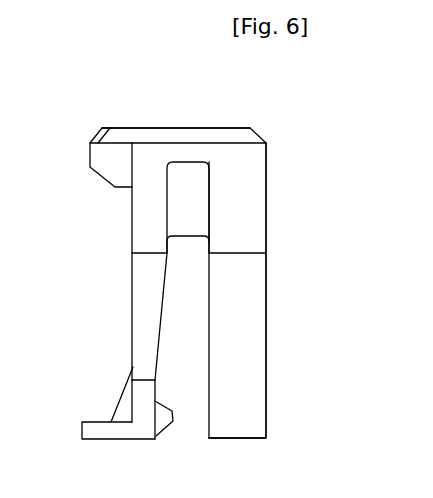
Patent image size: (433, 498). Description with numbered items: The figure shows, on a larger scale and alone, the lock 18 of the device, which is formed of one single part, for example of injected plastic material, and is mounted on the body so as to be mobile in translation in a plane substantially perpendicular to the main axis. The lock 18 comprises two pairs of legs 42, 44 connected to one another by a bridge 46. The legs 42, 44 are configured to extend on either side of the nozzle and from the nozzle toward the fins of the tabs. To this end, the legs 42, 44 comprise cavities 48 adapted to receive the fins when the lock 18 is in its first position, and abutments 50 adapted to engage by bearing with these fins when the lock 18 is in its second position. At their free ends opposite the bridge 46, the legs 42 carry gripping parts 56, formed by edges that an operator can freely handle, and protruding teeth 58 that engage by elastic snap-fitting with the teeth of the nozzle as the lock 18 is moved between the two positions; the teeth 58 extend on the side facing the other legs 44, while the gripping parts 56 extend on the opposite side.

The lock 18 is at (316, 184).
The legs 42 is at (122, 338).
The legs 44 is at (278, 358).
The bridge 46 is at (203, 116).
The cavities 48 is at (148, 296).
The abutments 50 is at (149, 211).
The gripping parts 56 is at (98, 440).
The protruding teeth 58 is at (170, 425).